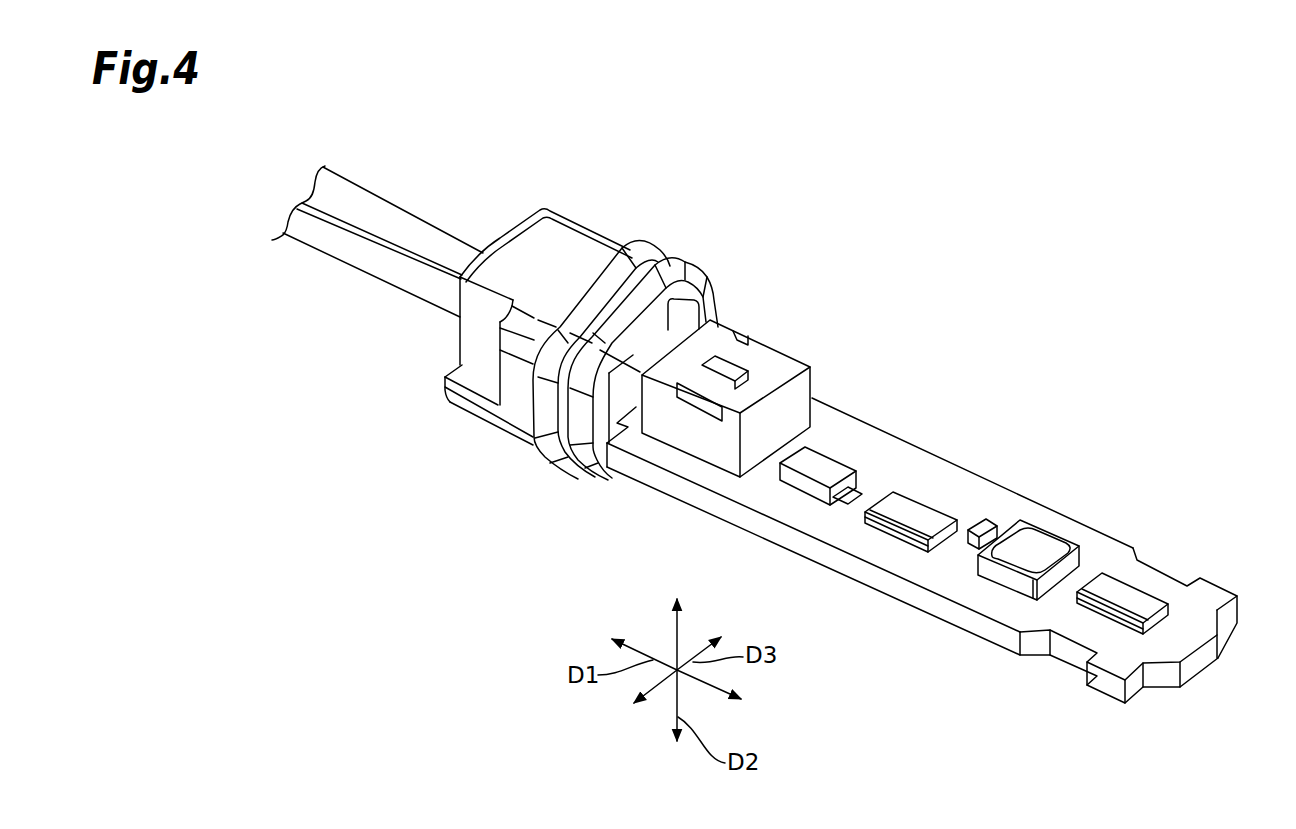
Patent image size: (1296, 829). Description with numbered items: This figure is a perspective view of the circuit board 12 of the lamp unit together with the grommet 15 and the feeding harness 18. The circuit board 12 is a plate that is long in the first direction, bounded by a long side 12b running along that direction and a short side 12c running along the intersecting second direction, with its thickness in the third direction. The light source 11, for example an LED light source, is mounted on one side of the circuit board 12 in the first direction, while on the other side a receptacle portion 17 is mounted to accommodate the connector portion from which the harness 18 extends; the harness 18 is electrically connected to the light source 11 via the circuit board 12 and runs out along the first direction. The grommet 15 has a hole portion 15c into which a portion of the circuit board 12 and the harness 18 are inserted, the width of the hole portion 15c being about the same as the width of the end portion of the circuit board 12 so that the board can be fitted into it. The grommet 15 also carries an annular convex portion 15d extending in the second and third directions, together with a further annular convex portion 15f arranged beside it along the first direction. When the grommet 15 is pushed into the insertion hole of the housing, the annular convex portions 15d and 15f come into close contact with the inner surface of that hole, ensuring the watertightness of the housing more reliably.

The light source 11 is at (1030, 547).
The circuit board 12 is at (990, 468).
The long side 12b is at (937, 452).
The short side 12c is at (1200, 662).
The grommet 15 is at (577, 214).
The hole portion 15c is at (690, 320).
The annular convex portion 15d is at (687, 263).
The annular convex portion 15f is at (657, 250).
The receptacle portion 17 is at (795, 360).
The feeding harness 18 is at (357, 257).